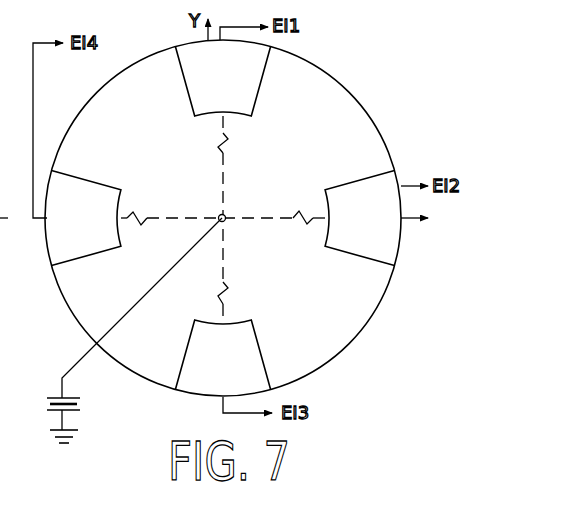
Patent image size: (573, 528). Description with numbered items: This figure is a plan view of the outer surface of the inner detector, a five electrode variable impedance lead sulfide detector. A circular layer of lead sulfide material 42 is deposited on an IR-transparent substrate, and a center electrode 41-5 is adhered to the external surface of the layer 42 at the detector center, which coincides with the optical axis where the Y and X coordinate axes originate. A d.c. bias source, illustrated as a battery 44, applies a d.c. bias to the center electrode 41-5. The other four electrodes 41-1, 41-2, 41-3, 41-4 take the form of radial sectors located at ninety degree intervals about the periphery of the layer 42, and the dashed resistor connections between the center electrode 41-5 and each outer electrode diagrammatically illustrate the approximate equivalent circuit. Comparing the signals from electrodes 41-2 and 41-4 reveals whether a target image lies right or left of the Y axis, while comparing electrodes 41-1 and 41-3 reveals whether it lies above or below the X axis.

The outer electrode 41-1 is at (242, 81).
The outer electrode 41-2 is at (359, 217).
The outer electrode 41-3 is at (242, 374).
The outer electrode 41-4 is at (98, 230).
The center electrode 41-5 is at (226, 212).
The lead sulfide layer 42 is at (329, 80).
The battery 44 is at (43, 418).